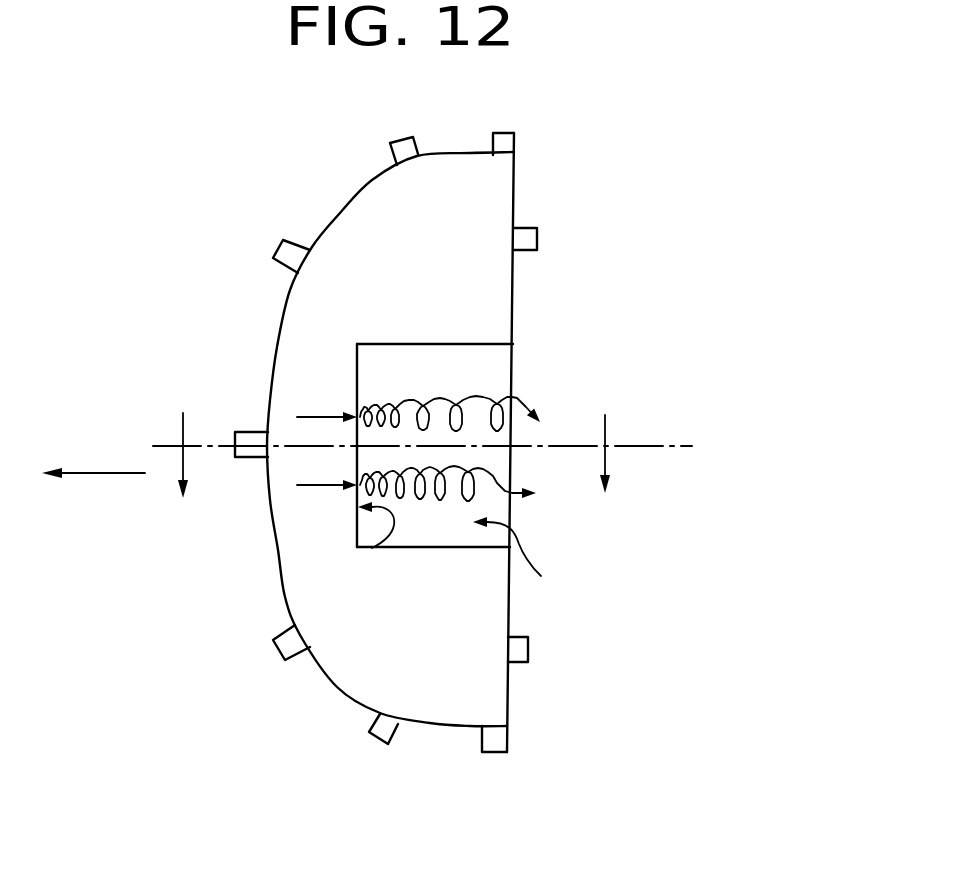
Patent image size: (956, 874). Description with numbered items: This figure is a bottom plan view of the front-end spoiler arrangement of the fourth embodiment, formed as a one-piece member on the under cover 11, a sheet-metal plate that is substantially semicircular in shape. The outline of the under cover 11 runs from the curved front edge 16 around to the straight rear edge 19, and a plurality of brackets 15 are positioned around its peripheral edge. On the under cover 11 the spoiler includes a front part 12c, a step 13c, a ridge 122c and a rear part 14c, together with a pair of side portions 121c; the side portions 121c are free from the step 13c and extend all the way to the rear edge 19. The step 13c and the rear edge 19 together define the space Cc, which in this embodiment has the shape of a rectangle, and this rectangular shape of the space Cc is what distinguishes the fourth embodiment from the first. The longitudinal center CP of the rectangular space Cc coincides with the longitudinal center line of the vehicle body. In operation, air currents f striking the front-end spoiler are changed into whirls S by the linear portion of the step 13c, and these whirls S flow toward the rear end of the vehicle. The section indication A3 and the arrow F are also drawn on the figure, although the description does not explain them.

The under cover 11 is at (327, 200).
The front part 12c is at (290, 380).
The ridge 122c is at (283, 577).
The side portions 121c is at (482, 188).
The rear edge 19 is at (508, 685).
The brackets 15 is at (524, 648).
The longitudinal center CP is at (357, 449).
The rear part 14c is at (460, 546).
The step 13c is at (371, 548).
The curved front edge 16 is at (355, 520).
The space Cc is at (470, 502).
The whirls S is at (419, 500).
The air currents f is at (317, 414).
The section line A3 is at (391, 480).
The force direction F is at (97, 475).